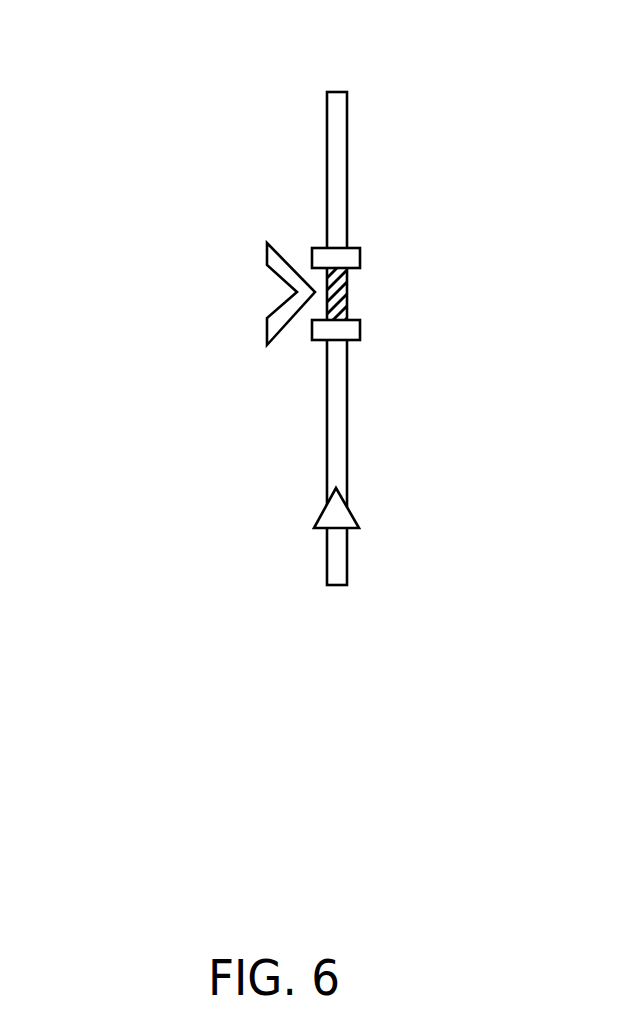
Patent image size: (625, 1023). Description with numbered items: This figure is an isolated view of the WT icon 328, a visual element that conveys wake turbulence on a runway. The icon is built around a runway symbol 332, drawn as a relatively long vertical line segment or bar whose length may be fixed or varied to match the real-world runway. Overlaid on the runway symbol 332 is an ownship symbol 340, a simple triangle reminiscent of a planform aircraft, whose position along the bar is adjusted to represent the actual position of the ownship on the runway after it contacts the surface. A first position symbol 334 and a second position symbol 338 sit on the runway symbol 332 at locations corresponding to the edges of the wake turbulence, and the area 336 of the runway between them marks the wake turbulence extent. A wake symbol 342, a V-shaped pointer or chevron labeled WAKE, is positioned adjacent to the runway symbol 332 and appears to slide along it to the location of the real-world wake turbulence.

The WT icon 328 is at (98, 85).
The runway symbol 332 is at (347, 145).
The first position symbol 334 is at (360, 255).
The area 336 is at (347, 305).
The second position symbol 338 is at (360, 327).
The ownship symbol 340 is at (355, 510).
The wake symbol 342 is at (282, 333).